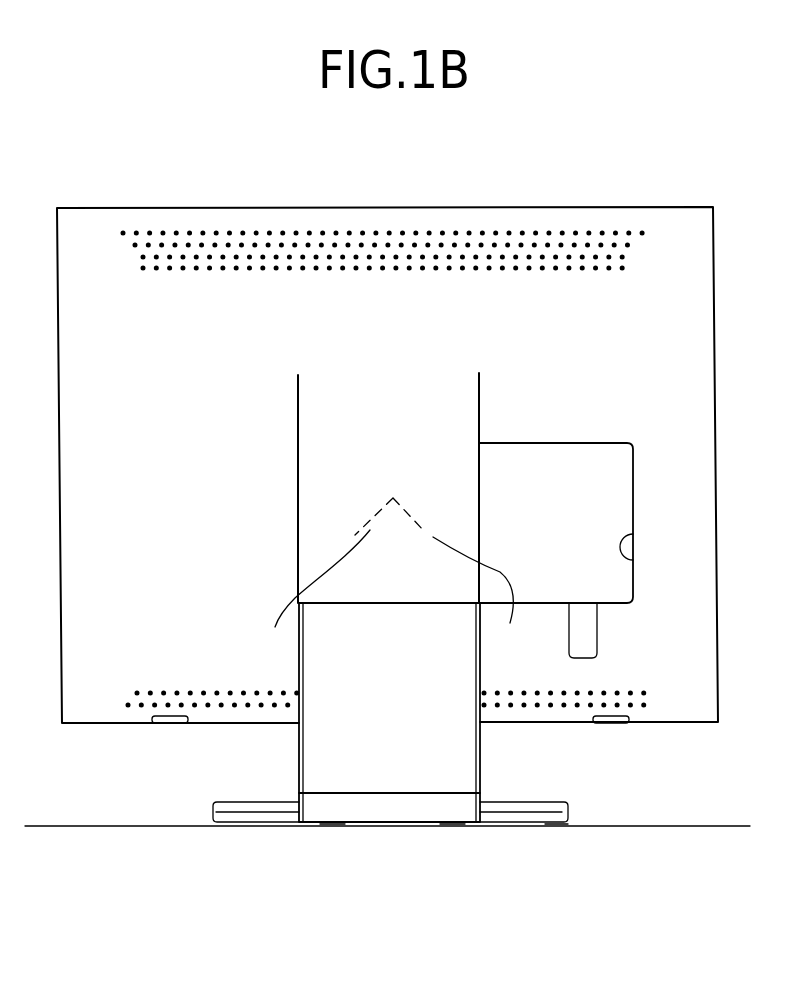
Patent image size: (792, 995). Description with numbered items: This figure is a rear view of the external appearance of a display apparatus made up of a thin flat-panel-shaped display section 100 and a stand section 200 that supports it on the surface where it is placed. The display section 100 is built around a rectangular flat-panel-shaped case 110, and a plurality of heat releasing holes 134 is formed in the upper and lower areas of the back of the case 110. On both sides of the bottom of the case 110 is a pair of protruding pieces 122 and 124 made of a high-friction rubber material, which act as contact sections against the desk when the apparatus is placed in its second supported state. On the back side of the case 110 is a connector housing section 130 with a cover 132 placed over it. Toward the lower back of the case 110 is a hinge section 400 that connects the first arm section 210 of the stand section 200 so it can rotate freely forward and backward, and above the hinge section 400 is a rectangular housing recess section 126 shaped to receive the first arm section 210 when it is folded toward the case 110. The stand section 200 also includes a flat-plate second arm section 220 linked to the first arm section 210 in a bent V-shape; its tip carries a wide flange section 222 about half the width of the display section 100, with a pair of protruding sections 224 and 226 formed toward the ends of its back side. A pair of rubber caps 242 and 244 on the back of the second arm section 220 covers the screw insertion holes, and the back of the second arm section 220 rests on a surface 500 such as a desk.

The display section 100 is at (387, 427).
The case 110 is at (87, 235).
The protruding piece 122 is at (168, 724).
The protruding piece 124 is at (612, 724).
The housing recess section 126 is at (325, 497).
The connector housing section 130 is at (633, 558).
The cover 132 is at (615, 503).
The heat releasing holes 134 is at (412, 242).
The stand section 200 is at (437, 783).
The first arm section 210 is at (393, 740).
The second arm section 220 is at (370, 827).
The flange section 222 is at (513, 802).
The protruding section 224 is at (222, 827).
The protruding section 226 is at (563, 829).
The cap 242 is at (333, 827).
The cap 244 is at (455, 828).
The hinge section 400 is at (394, 549).
The surface 500 is at (704, 822).